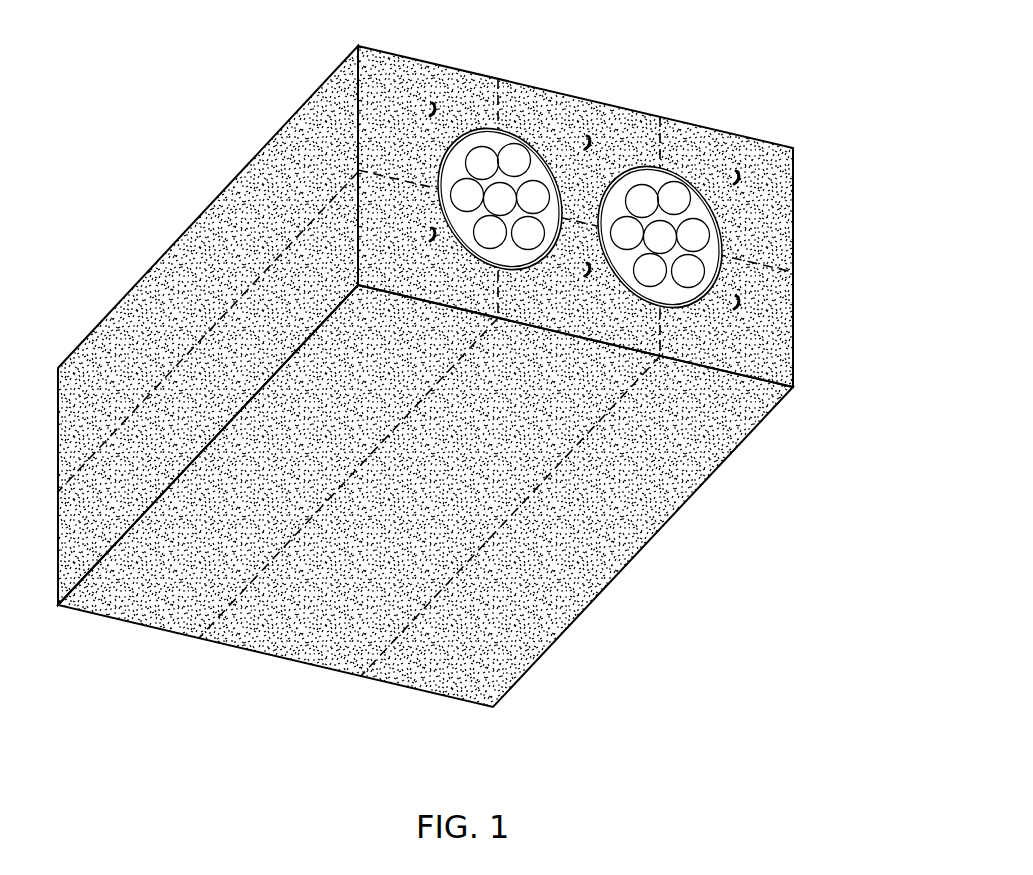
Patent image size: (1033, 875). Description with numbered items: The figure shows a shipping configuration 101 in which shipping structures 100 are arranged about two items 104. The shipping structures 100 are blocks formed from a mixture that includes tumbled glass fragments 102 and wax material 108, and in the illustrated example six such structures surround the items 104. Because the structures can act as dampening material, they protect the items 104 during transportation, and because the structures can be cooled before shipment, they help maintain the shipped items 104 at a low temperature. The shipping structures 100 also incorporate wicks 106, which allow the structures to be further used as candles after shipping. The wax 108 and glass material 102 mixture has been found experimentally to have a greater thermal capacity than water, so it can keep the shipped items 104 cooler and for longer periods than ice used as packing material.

The shipping structures 100 is at (700, 457).
The shipping configuration 101 is at (433, 376).
The tumbled glass fragments 102 is at (648, 514).
The items 104 is at (638, 183).
The wicks 106 is at (745, 184).
The wax material 108 is at (570, 600).